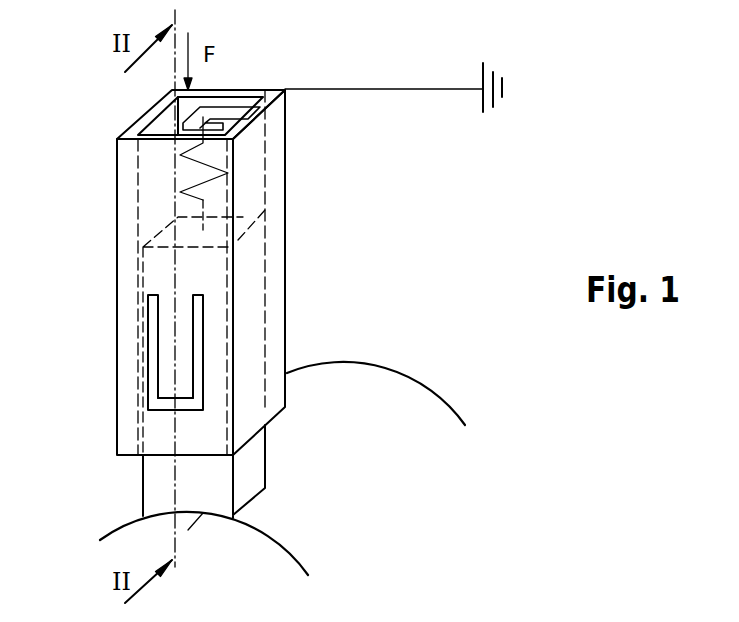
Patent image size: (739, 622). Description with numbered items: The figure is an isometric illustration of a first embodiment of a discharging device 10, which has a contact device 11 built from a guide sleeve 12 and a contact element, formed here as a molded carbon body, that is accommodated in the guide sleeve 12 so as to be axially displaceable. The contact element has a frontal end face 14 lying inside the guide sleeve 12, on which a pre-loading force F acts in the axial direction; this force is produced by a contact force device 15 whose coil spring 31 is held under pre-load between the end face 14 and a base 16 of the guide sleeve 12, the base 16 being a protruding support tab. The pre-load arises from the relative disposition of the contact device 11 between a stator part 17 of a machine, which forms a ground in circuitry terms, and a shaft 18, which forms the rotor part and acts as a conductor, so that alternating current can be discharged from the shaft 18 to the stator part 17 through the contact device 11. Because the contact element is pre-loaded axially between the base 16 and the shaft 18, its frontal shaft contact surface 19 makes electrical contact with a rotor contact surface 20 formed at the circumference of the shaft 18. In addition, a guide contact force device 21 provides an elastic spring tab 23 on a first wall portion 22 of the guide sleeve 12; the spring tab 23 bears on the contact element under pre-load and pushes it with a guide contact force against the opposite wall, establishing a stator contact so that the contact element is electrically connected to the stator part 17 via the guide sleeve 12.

The discharging device 10 is at (368, 82).
The contact device 11 is at (289, 270).
The guide sleeve 12 is at (117, 246).
The end face 14 is at (243, 222).
The contact force device 15 is at (175, 180).
The base 16 is at (217, 113).
The stator part 17 is at (507, 81).
The shaft 18 is at (382, 460).
The shaft contact surface 19 is at (207, 517).
The rotor contact surface 20 is at (170, 493).
The guide contact force device 21 is at (175, 352).
The first wall portion 22 is at (130, 388).
The spring tab 23 is at (170, 334).
The coil spring 31 is at (178, 196).